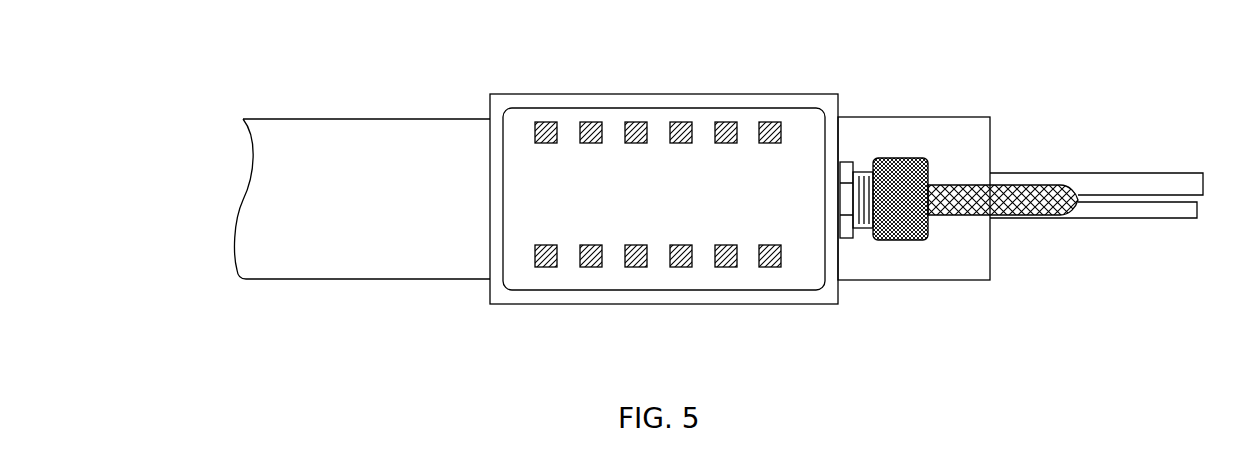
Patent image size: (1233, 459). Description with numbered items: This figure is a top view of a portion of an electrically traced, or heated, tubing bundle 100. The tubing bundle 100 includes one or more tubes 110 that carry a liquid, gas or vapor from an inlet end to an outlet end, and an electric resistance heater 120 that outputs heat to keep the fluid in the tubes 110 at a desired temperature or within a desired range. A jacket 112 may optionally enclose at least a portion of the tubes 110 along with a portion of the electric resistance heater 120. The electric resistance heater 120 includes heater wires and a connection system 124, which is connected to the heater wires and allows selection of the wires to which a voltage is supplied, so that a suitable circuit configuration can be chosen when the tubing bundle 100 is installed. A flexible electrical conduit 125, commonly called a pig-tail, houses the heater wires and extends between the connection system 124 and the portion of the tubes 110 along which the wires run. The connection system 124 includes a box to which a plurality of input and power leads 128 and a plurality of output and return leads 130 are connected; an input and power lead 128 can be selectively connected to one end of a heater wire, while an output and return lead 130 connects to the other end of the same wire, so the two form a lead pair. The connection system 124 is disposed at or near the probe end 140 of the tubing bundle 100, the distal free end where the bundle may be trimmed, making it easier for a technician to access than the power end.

The tubing bundle 100 is at (410, 91).
The tube 110 is at (1143, 182).
The jacket 112 is at (270, 123).
The electric resistance heater 120 is at (829, 92).
The connection system 124 is at (641, 296).
The flexible electrical conduit 125 is at (1033, 180).
The input and power lead 128 is at (632, 123).
The output and return lead 130 is at (683, 256).
The probe end 140 is at (962, 255).